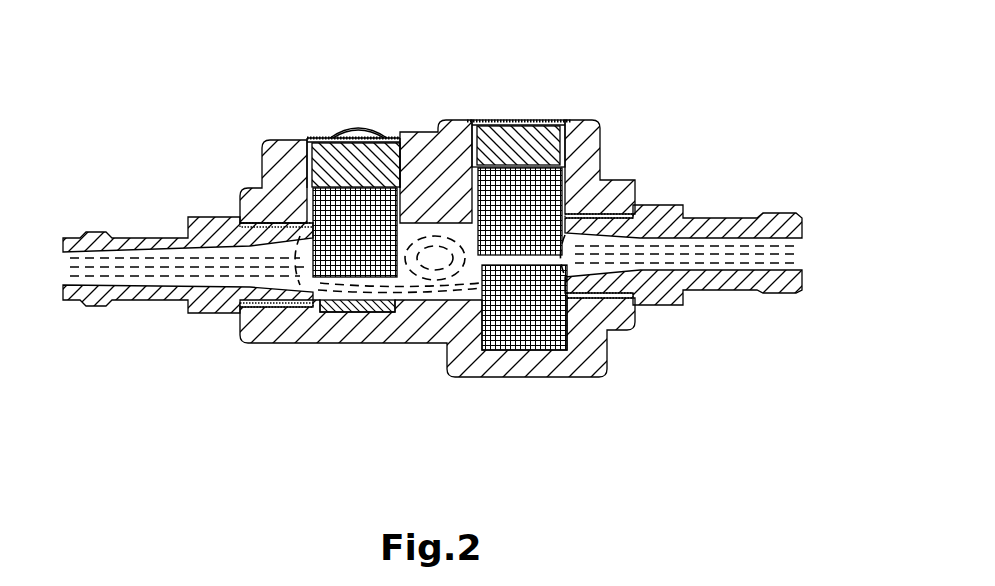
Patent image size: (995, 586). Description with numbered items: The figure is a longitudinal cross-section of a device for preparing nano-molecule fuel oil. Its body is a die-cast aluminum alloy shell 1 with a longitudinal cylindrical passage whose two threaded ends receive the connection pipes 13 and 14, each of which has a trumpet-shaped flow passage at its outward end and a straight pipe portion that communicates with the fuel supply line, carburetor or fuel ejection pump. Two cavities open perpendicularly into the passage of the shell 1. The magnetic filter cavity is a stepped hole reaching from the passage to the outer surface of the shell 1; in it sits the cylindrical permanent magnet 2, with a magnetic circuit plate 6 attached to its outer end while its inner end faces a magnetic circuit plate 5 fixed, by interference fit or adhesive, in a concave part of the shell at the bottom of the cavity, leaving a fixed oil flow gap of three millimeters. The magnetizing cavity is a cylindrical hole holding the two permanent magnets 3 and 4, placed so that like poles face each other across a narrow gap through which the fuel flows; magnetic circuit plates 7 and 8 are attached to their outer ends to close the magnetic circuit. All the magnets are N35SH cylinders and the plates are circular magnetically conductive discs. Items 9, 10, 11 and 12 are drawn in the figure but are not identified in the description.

The shell 1 is at (437, 180).
The permanent magnet 2 is at (380, 137).
The permanent magnet 3 is at (492, 143).
The permanent magnet 4 is at (568, 367).
The magnetic circuit plate 5 is at (352, 313).
The magnetic circuit plate 6 is at (317, 137).
The magnetic circuit plate 7 is at (553, 122).
The magnetic circuit plate 8 is at (522, 350).
The domed cover plate 9 is at (343, 128).
The cover plate 10 is at (523, 135).
The recess wall 11 is at (307, 138).
The housing right part 12 is at (573, 118).
The connection pipe 13 is at (265, 205).
The connection pipe 14 is at (660, 213).